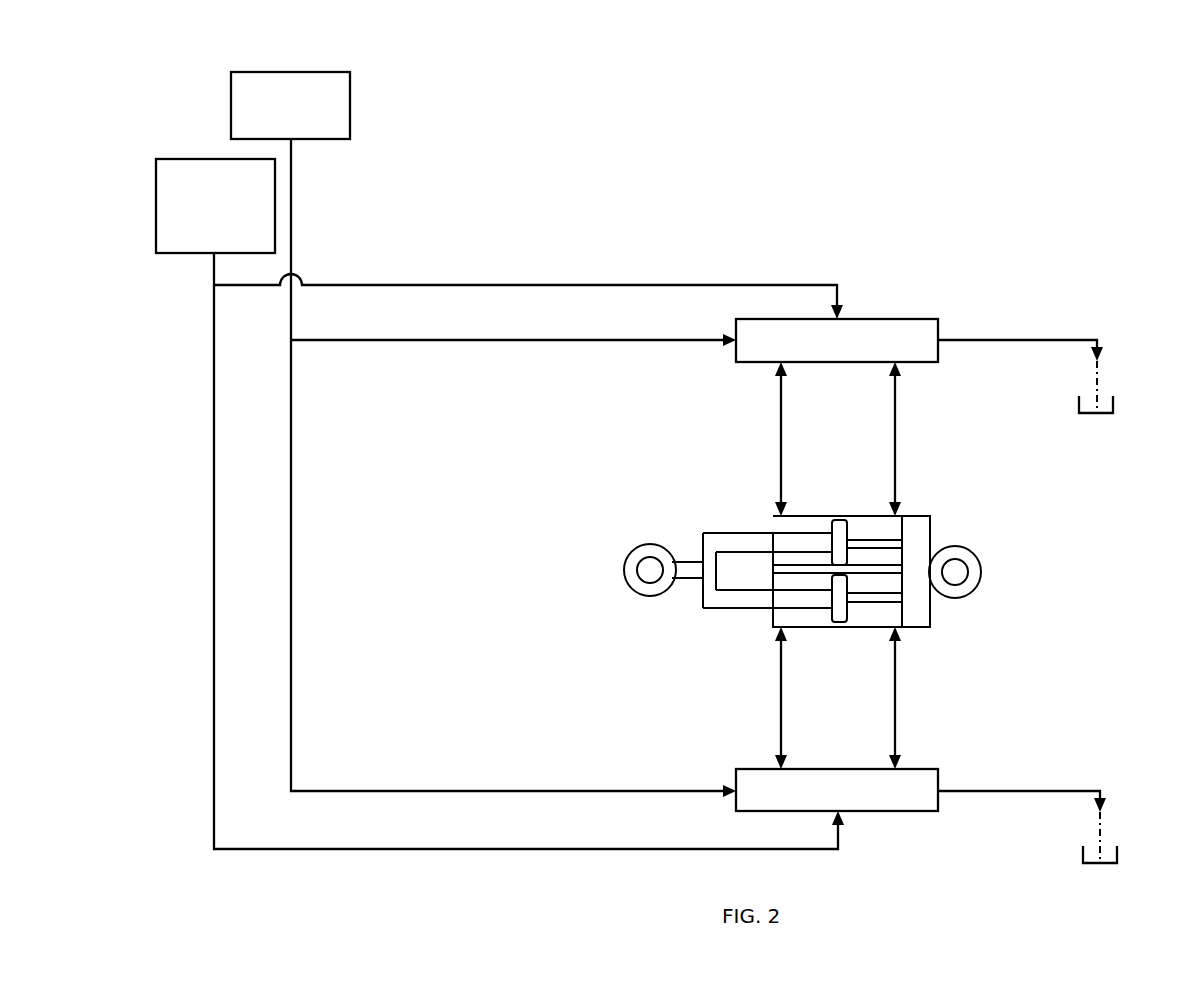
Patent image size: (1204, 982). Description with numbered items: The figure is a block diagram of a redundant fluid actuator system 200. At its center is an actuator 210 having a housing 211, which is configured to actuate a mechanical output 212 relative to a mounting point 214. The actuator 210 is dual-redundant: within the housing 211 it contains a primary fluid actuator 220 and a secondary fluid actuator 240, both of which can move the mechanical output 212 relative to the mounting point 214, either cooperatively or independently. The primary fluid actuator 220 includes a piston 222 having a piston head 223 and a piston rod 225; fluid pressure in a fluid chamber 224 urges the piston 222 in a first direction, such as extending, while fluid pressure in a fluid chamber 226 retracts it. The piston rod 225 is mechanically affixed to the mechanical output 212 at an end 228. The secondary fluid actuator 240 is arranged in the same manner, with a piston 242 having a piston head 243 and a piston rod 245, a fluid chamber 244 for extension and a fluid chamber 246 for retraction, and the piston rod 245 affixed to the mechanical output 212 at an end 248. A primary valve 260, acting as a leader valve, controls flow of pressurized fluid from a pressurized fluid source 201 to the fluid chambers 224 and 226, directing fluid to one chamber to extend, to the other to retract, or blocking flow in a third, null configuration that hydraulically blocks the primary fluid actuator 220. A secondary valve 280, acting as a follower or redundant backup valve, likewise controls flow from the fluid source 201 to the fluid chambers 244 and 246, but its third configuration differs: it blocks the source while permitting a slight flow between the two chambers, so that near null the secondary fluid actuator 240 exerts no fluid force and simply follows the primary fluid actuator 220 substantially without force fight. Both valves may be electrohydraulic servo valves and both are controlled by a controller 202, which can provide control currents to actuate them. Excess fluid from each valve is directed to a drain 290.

The redundant fluid actuator system 200 is at (208, 46).
The pressurized fluid source 201 is at (215, 206).
The controller 202 is at (290, 105).
The actuator 210 is at (653, 460).
The housing 211 is at (857, 623).
The mechanical output 212 is at (640, 596).
The mounting point 214 is at (972, 596).
The primary fluid actuator 220 is at (607, 513).
The piston 222 is at (752, 533).
The piston head 223 is at (838, 520).
The fluid chamber 224 is at (898, 528).
The piston rod 225 is at (802, 540).
The fluid chamber 226 is at (773, 528).
The end 228 is at (702, 535).
The secondary fluid actuator 240 is at (607, 575).
The piston 242 is at (744, 610).
The piston head 243 is at (841, 623).
The fluid chamber 244 is at (896, 612).
The piston rod 245 is at (795, 598).
The fluid chamber 246 is at (776, 612).
The end 248 is at (702, 607).
The primary valve 260 is at (938, 319).
The secondary valve 280 is at (938, 811).
The drain 290 is at (1113, 400).